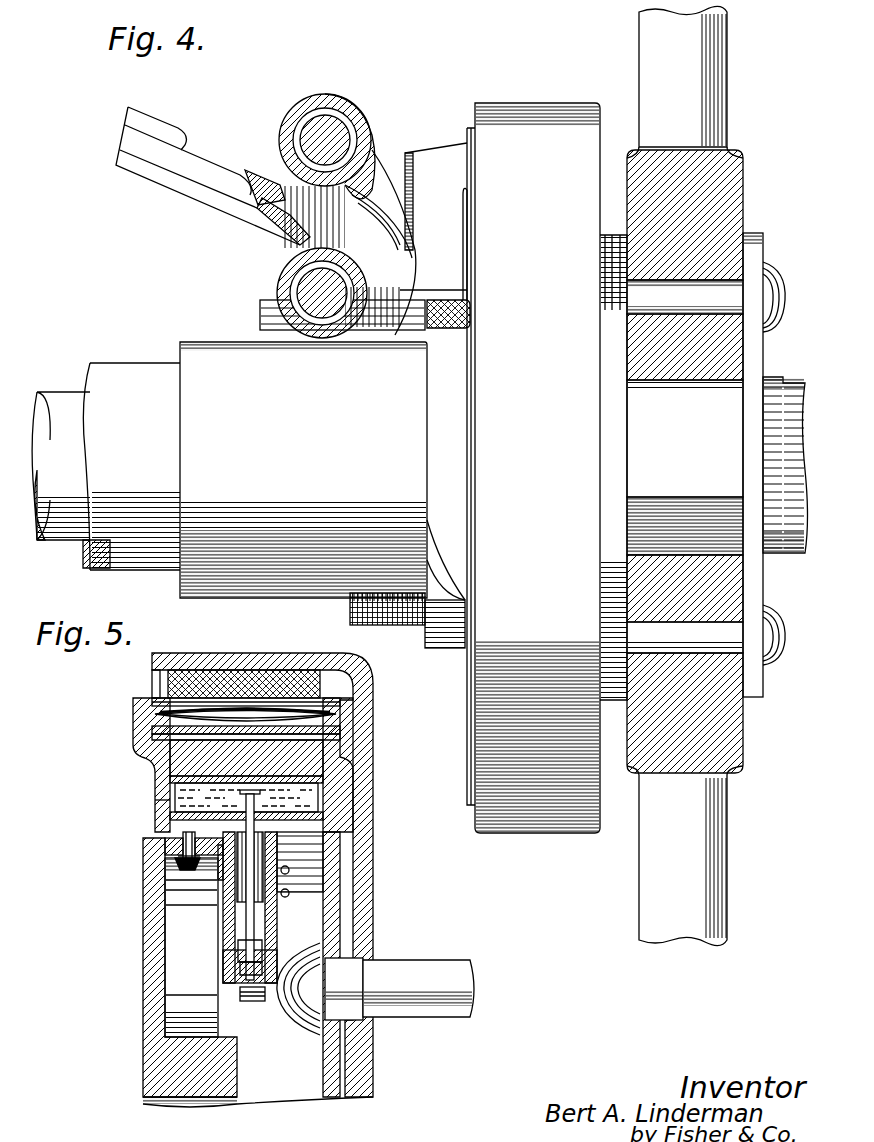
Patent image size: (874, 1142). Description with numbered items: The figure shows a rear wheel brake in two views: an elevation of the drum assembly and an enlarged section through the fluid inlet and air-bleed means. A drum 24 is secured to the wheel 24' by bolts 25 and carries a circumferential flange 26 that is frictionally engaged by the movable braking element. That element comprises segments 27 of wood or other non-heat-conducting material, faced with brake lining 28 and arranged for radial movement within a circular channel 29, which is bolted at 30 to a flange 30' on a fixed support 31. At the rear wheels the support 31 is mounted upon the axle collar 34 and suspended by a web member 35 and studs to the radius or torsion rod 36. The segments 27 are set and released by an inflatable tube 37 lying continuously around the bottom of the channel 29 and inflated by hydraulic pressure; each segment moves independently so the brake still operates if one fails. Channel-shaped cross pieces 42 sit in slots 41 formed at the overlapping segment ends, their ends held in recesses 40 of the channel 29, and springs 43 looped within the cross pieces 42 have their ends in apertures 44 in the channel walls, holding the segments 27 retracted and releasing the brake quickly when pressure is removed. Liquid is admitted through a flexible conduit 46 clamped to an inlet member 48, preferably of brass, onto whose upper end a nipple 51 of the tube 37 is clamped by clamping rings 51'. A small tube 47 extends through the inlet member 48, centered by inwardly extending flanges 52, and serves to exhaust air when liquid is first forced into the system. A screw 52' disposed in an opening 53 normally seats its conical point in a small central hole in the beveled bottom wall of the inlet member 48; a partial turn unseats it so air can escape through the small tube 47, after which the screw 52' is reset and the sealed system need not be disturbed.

In FIG. 4, the drum 24 is at (654, 475).
In FIG. 4, the wheel 24' is at (711, 460).
In FIG. 4, the bolts 25 is at (700, 290).
In FIG. 5, the bolts 25 is at (410, 970).
In FIG. 4, the circumferential flange 26 is at (475, 106).
In FIG. 5, the circumferential flange 26 is at (210, 665).
In FIG. 5, the segments 27 is at (188, 757).
In FIG. 5, the brake lining 28 is at (262, 685).
In FIG. 5, the circular channel 29 is at (158, 803).
In FIG. 5, the bolt connection 30 is at (144, 855).
In FIG. 5, the flange 30' is at (144, 887).
In FIG. 5, the fixed support 31 is at (155, 1025).
In FIG. 4, the axle collar 34 is at (235, 340).
In FIG. 4, the web member 35 is at (430, 270).
In FIG. 4, the radius or torsion rod 36 is at (333, 115).
In FIG. 5, the inflatable tube 37 is at (320, 815).
In FIG. 5, the recesses 40 is at (150, 738).
In FIG. 5, the slots 41 is at (340, 730).
In FIG. 5, the channel-shaped cross pieces 42 is at (270, 718).
In FIG. 5, the springs 43 is at (328, 722).
In FIG. 5, the apertures 44 is at (152, 704).
In FIG. 4, the conduit 46 is at (455, 329).
In FIG. 5, the small tube 47 is at (238, 955).
In FIG. 5, the inlet member 48 is at (246, 950).
In FIG. 5, the nipple 51 is at (320, 907).
In FIG. 5, the clamping rings 51' is at (163, 893).
In FIG. 5, the inwardly extending flanges 52 is at (277, 947).
In FIG. 5, the screw 52' is at (281, 1001).
In FIG. 5, the opening 53 is at (276, 1000).